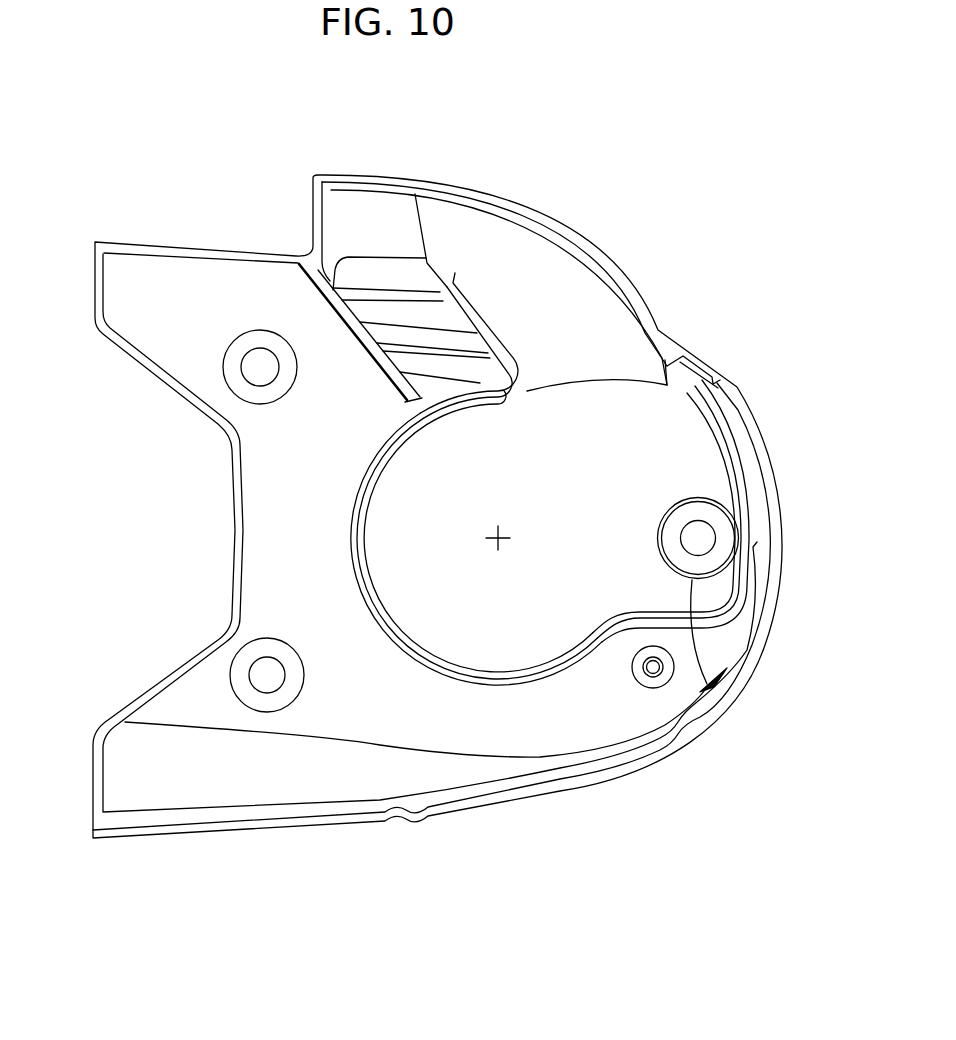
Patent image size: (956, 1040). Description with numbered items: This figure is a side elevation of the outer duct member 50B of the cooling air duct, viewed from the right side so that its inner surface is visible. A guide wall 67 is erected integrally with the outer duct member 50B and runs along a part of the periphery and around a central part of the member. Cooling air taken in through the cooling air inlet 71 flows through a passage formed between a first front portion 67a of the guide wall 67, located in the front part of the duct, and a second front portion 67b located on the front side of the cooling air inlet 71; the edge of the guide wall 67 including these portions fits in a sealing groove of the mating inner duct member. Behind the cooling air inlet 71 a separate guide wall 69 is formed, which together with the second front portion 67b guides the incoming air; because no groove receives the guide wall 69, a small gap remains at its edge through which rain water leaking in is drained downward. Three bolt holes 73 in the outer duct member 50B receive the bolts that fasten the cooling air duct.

The outer duct member 50B is at (198, 193).
The guide wall 67 is at (548, 670).
The first front portion 67a is at (595, 260).
The second front portion 67b is at (470, 313).
The guide wall 69 is at (350, 320).
The cooling air inlet 71 is at (375, 240).
The bolt holes 73 is at (255, 367).